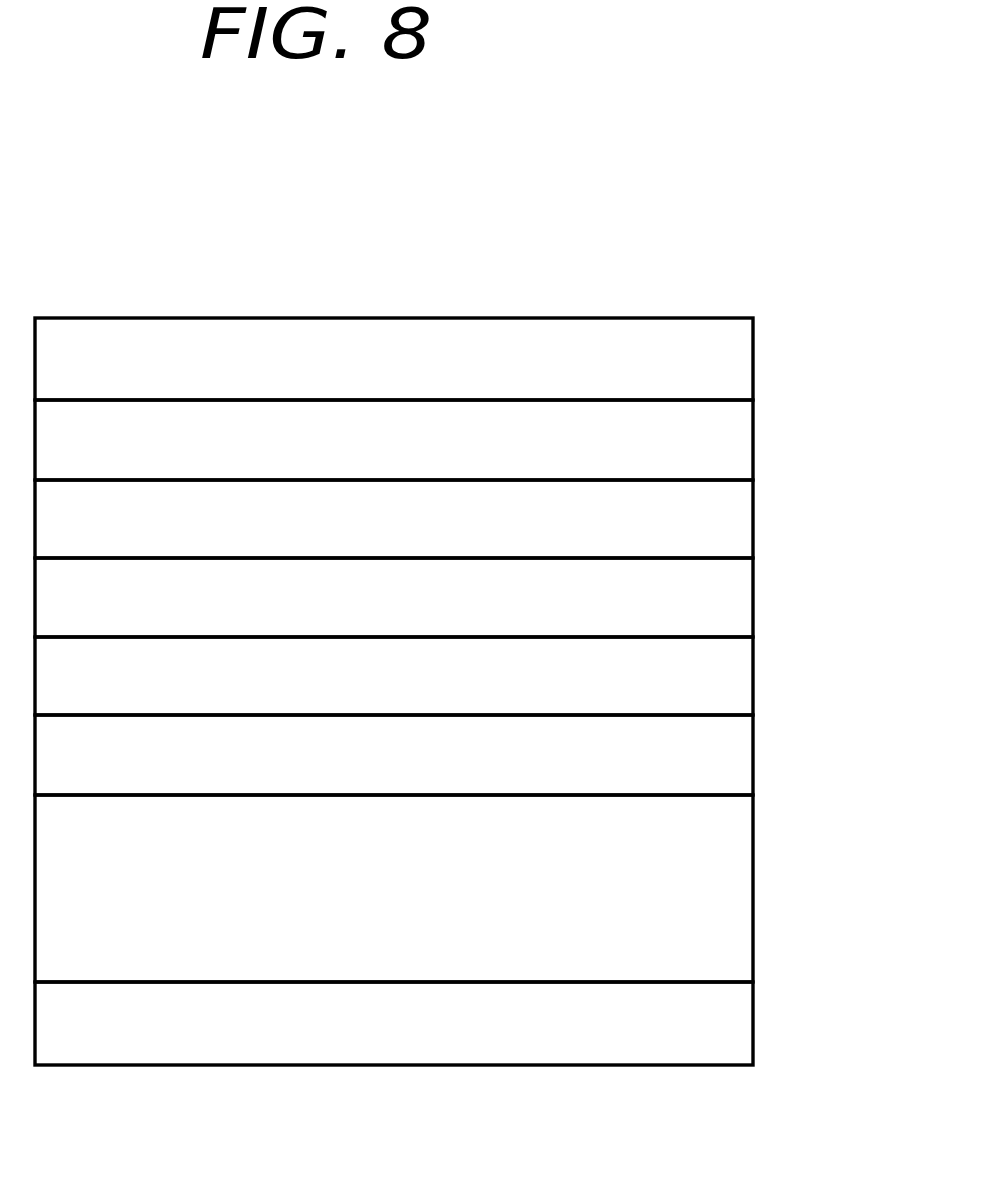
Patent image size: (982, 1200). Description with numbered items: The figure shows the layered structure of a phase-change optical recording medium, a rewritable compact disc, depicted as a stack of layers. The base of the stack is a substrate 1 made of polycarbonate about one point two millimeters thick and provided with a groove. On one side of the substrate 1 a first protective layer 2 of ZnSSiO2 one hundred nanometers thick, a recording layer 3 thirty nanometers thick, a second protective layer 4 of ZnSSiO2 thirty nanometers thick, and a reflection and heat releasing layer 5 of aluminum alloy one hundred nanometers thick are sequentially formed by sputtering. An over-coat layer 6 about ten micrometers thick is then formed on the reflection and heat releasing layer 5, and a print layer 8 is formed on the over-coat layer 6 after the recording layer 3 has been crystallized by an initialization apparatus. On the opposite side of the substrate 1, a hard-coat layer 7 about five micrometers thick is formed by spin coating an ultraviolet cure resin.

The print layer 8 is at (753, 365).
The over-coat layer 6 is at (753, 448).
The reflection and heat releasing layer 5 is at (753, 527).
The second protective layer 4 is at (753, 602).
The recording layer 3 is at (753, 685).
The first protective layer 2 is at (753, 762).
The substrate 1 is at (753, 907).
The hard-coat layer 7 is at (753, 1028).